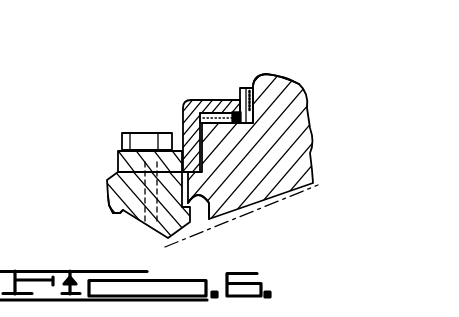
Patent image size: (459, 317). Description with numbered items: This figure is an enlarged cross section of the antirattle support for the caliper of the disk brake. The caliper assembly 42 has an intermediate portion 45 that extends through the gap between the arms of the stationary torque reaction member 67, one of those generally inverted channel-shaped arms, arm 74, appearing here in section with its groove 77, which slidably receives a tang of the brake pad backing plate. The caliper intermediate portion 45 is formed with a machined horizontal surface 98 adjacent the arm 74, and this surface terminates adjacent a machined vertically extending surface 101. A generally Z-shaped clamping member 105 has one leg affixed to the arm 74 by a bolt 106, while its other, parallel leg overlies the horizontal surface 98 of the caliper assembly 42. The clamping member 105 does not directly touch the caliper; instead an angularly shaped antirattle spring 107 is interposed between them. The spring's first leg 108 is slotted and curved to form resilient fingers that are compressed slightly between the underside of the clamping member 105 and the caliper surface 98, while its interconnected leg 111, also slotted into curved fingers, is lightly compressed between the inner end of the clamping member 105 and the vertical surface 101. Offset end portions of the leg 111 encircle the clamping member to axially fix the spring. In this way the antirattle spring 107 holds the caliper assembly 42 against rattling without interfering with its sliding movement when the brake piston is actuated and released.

The caliper assembly 42 is at (310, 113).
The intermediate portion 45 is at (263, 76).
The torque reaction member 67 is at (108, 210).
The arm 74 is at (106, 190).
The groove 77 is at (208, 210).
The horizontal surface 98 is at (240, 119).
The vertically extending surface 101 is at (254, 84).
The clamping member 105 is at (114, 158).
The bolt 106 is at (137, 134).
The antirattle spring 107 is at (238, 92).
The first leg 108 is at (232, 99).
The leg 111 is at (249, 86).